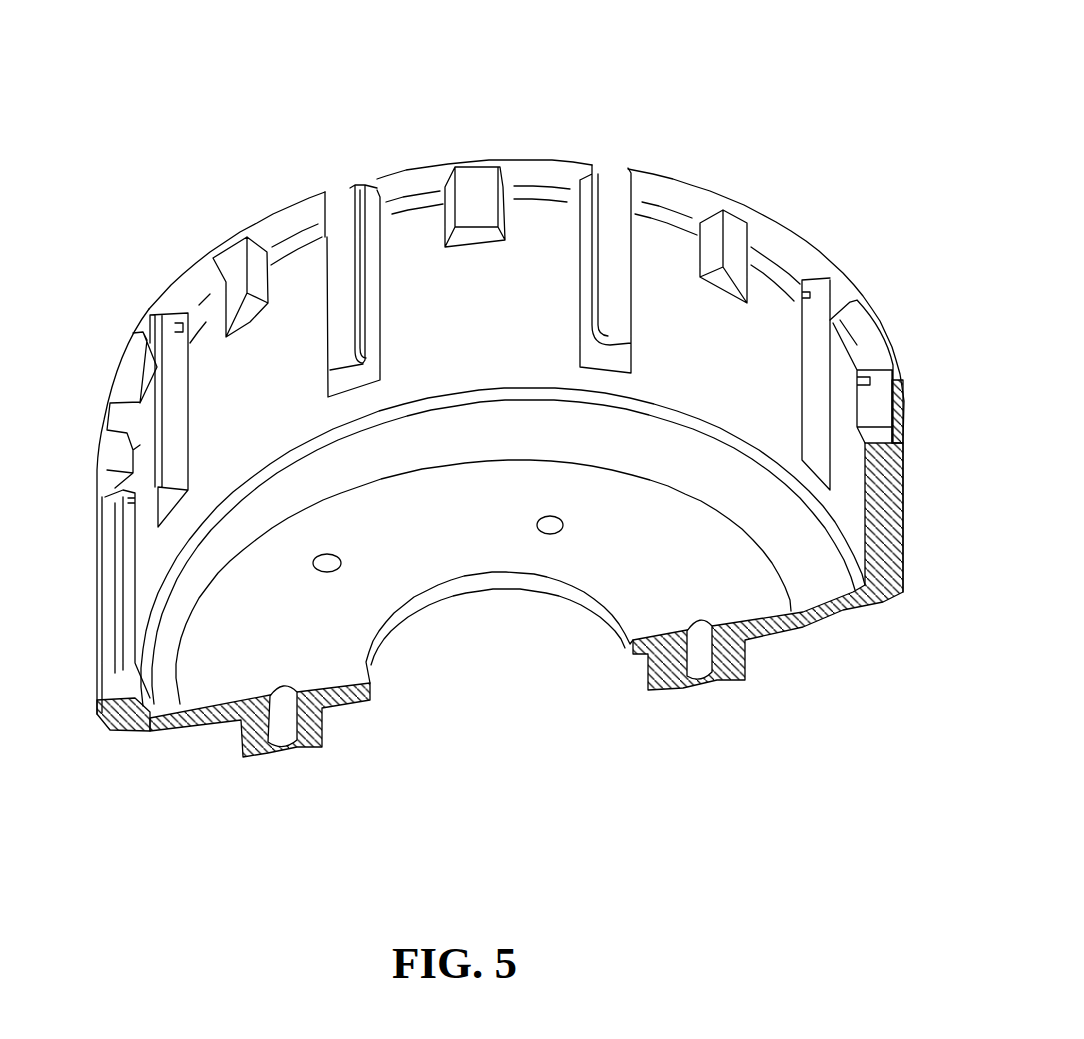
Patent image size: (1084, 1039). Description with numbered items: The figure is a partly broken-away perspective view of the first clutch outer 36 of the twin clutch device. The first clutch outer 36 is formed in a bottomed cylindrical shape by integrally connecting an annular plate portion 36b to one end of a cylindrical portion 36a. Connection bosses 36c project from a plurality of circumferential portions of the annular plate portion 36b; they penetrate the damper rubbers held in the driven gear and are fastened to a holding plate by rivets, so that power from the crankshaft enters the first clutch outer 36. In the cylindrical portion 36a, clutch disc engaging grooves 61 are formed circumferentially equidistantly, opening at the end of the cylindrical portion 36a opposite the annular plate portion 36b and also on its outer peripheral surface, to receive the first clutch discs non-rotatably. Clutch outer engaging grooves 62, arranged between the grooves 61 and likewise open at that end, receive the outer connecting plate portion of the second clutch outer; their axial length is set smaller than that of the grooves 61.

The first clutch outer 36 is at (805, 628).
The cylindrical portion 36a is at (543, 220).
The annular plate portion 36b is at (383, 597).
The connection bosses 36c is at (317, 750).
The clutch disc engaging grooves 61 is at (365, 245).
The clutch outer engaging grooves 62 is at (457, 212).